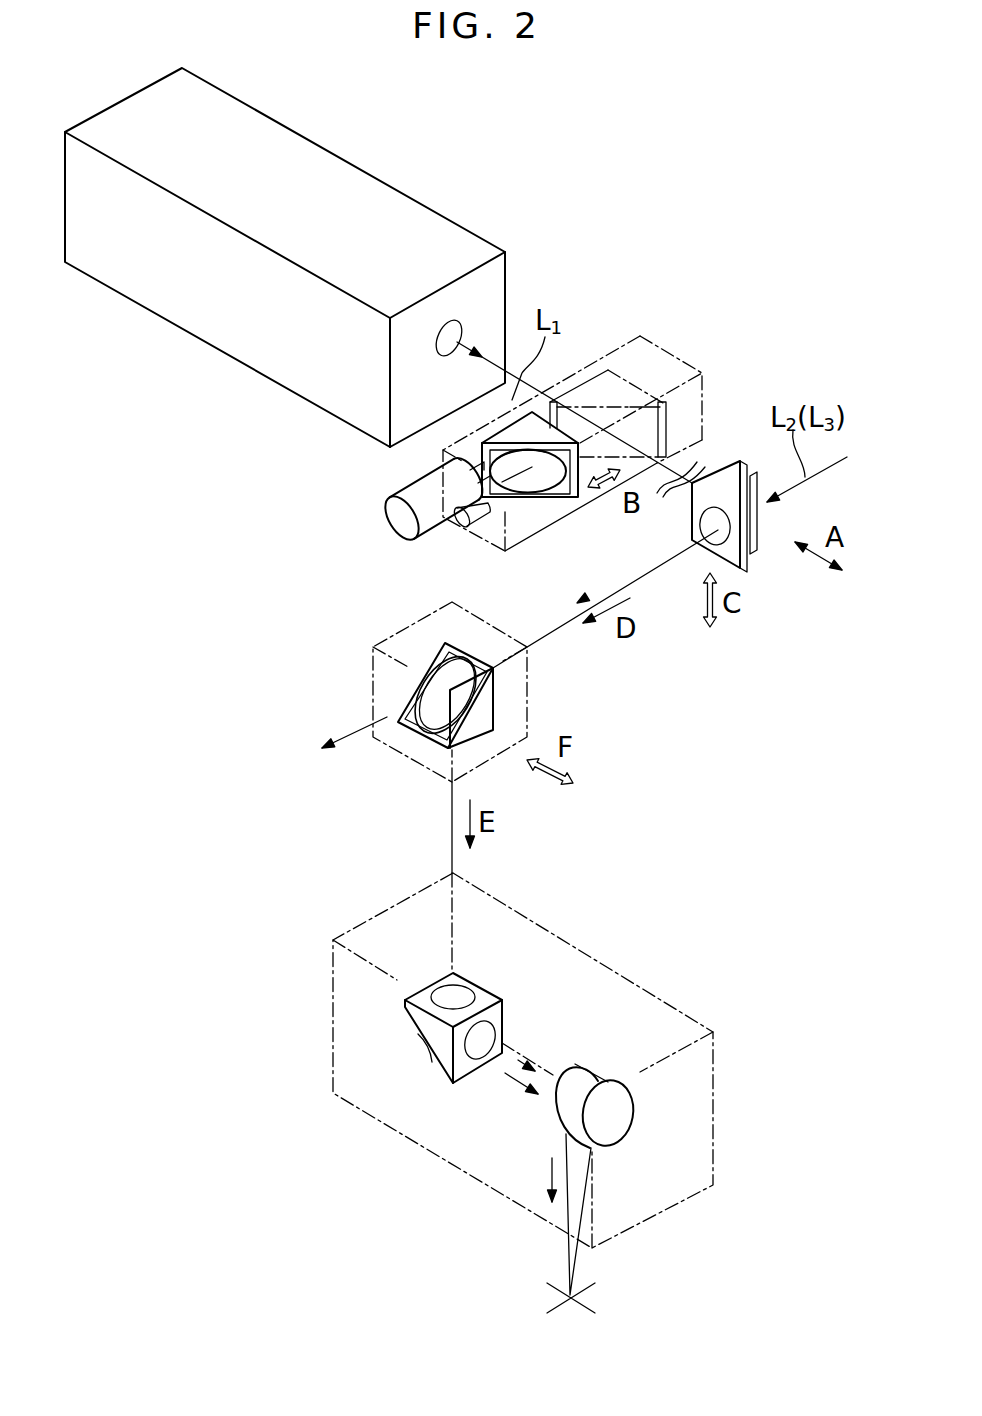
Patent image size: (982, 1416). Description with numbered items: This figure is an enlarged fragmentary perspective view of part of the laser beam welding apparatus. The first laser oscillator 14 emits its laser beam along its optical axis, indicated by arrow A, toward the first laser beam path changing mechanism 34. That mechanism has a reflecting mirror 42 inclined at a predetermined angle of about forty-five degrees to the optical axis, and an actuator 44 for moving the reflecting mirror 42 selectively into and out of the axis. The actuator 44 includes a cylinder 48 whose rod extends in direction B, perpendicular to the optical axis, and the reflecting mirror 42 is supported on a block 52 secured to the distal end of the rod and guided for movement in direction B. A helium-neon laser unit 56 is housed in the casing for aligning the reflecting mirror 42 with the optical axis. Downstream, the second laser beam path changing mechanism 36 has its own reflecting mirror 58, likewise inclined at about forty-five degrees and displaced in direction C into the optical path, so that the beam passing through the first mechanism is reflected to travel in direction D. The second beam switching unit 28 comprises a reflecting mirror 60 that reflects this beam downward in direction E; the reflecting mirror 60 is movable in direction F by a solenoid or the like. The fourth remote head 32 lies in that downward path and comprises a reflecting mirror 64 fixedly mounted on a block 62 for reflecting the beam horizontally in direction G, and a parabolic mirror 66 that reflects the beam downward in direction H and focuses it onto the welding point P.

The first laser oscillator 14 is at (400, 208).
The second beam switching unit 28 is at (398, 706).
The fourth remote head 32 is at (523, 1094).
The first laser beam path changing mechanism 34 is at (672, 340).
The second laser beam path changing mechanism 36 is at (732, 453).
The reflecting mirror 42 is at (530, 484).
The actuator 44 is at (386, 518).
The cylinder 48 is at (396, 485).
The block 52 is at (506, 470).
The He-Ne laser unit 56 is at (475, 527).
The reflecting mirror 58 is at (757, 523).
The reflecting mirror 60 is at (403, 723).
The block 62 is at (424, 1035).
The reflecting mirror 64 is at (422, 1047).
The parabolic mirror 66 is at (590, 1078).